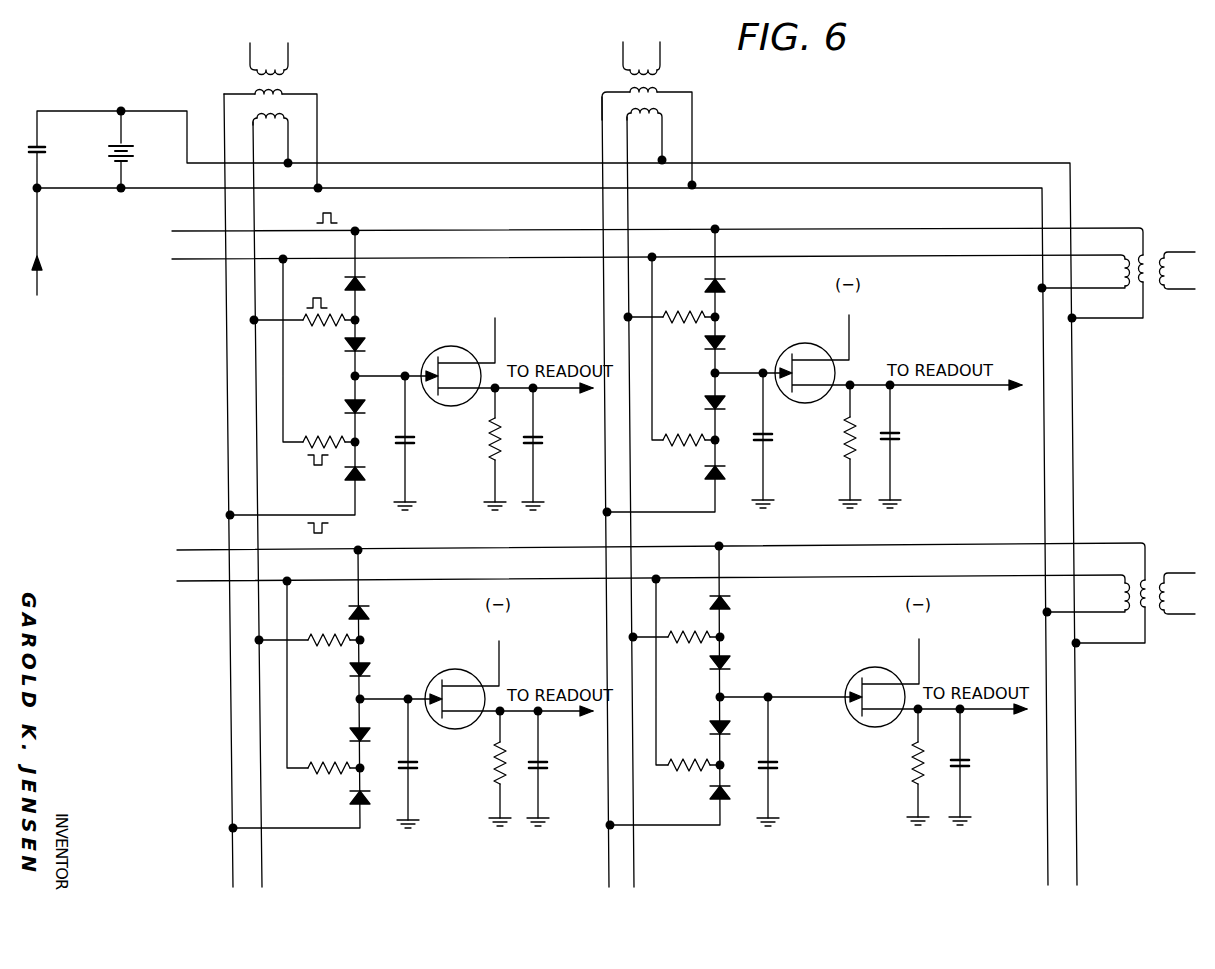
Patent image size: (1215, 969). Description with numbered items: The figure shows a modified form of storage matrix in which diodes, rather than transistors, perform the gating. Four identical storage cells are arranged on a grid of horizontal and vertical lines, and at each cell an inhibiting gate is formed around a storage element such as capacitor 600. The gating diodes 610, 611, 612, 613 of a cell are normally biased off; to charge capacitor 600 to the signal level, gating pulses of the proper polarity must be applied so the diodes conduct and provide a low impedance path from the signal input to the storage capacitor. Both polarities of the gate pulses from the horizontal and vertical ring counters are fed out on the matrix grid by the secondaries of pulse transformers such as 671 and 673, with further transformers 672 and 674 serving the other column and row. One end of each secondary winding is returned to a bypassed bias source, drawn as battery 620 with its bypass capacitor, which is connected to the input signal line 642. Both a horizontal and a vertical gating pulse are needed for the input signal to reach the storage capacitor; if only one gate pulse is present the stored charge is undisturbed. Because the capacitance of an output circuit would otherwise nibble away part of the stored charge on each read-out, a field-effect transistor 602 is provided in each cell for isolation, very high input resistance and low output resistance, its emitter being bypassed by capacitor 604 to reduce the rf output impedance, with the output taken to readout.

The storage capacitor 600 is at (412, 434).
The field-effect transistor 602 is at (438, 348).
The readout capacitor 604 is at (540, 434).
The gating diode 610 is at (366, 287).
The gating diode 611 is at (366, 350).
The gating diode 612 is at (364, 410).
The gating diode 613 is at (366, 477).
The battery 620 is at (127, 148).
The input signal line 642 is at (40, 242).
The pulse transformer 671 is at (286, 90).
The transformer 672 is at (656, 90).
The pulse transformer 673 is at (1150, 255).
The transformer 674 is at (1155, 575).